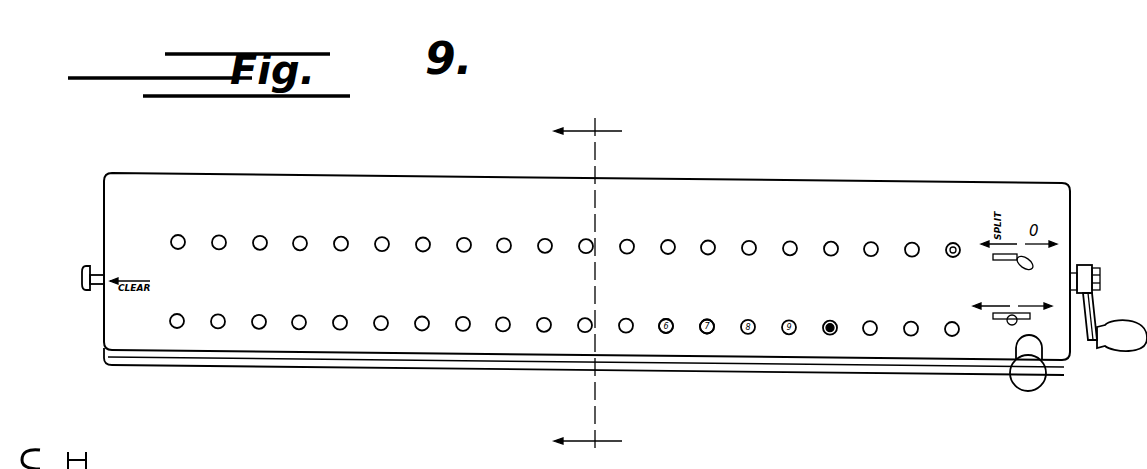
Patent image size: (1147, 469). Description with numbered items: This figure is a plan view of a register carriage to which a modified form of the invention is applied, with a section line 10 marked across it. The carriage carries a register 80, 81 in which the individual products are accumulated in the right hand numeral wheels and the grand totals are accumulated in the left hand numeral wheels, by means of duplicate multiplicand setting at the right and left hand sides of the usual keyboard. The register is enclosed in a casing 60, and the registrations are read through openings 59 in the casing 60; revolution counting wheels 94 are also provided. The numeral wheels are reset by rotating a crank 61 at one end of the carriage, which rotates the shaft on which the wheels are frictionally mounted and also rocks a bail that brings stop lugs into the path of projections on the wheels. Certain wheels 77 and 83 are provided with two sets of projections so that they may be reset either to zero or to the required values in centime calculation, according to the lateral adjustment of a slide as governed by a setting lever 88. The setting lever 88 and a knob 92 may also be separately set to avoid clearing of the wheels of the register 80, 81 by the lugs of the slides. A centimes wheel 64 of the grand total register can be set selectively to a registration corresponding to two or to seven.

The section line 10 is at (597, 287).
The casing 60 is at (617, 198).
The revolution counting wheels 94 is at (955, 244).
The knob 92 is at (86, 293).
The openings 59 is at (464, 331).
The register 81 is at (544, 332).
The centimes wheel 64 is at (585, 332).
The wheel 77 is at (626, 333).
The register 80 is at (666, 333).
The wheel 83 is at (830, 335).
The setting lever 88 is at (1010, 326).
The crank 61 is at (1103, 342).